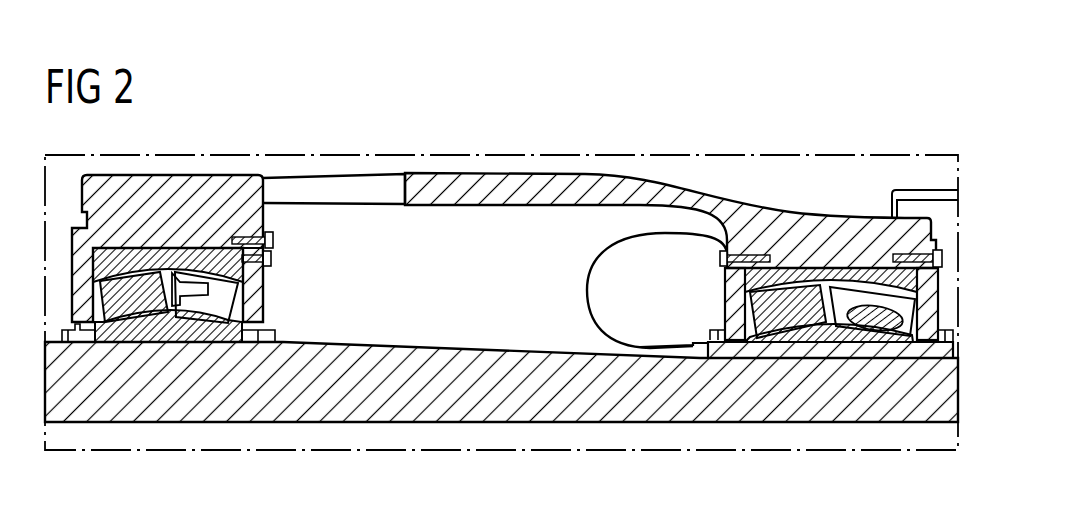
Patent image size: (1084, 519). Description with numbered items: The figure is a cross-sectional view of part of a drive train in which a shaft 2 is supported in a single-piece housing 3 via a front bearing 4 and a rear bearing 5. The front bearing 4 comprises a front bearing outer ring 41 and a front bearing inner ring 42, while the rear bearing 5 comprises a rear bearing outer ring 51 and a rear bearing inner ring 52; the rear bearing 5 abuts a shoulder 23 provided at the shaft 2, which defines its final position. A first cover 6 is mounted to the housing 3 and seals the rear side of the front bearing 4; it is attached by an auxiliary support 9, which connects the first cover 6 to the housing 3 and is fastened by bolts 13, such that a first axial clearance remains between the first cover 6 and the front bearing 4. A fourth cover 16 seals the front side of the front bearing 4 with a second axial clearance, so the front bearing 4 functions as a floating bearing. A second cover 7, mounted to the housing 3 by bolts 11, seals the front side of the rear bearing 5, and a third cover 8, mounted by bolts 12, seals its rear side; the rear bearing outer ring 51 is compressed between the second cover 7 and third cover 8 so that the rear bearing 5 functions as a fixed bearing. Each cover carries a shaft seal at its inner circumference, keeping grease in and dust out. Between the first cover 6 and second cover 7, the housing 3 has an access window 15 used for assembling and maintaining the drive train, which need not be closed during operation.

The shaft 2 is at (528, 408).
The shoulder 23 is at (697, 350).
The housing 3 is at (541, 190).
The access window 15 is at (361, 195).
The front bearing outer ring 41 is at (167, 262).
The front bearing 4 is at (185, 384).
The front bearing inner ring 42 is at (188, 333).
The fourth cover 16 is at (62, 345).
The bolts 13 is at (272, 241).
The auxiliary support 9 is at (271, 268).
The first cover 6 is at (255, 292).
The rear bearing outer ring 51 is at (793, 280).
The second cover 7 is at (724, 309).
The bolts 12 is at (916, 268).
The bolts 11 is at (718, 258).
The rear bearing 5 is at (831, 391).
The rear bearing inner ring 52 is at (793, 345).
The third cover 8 is at (950, 352).